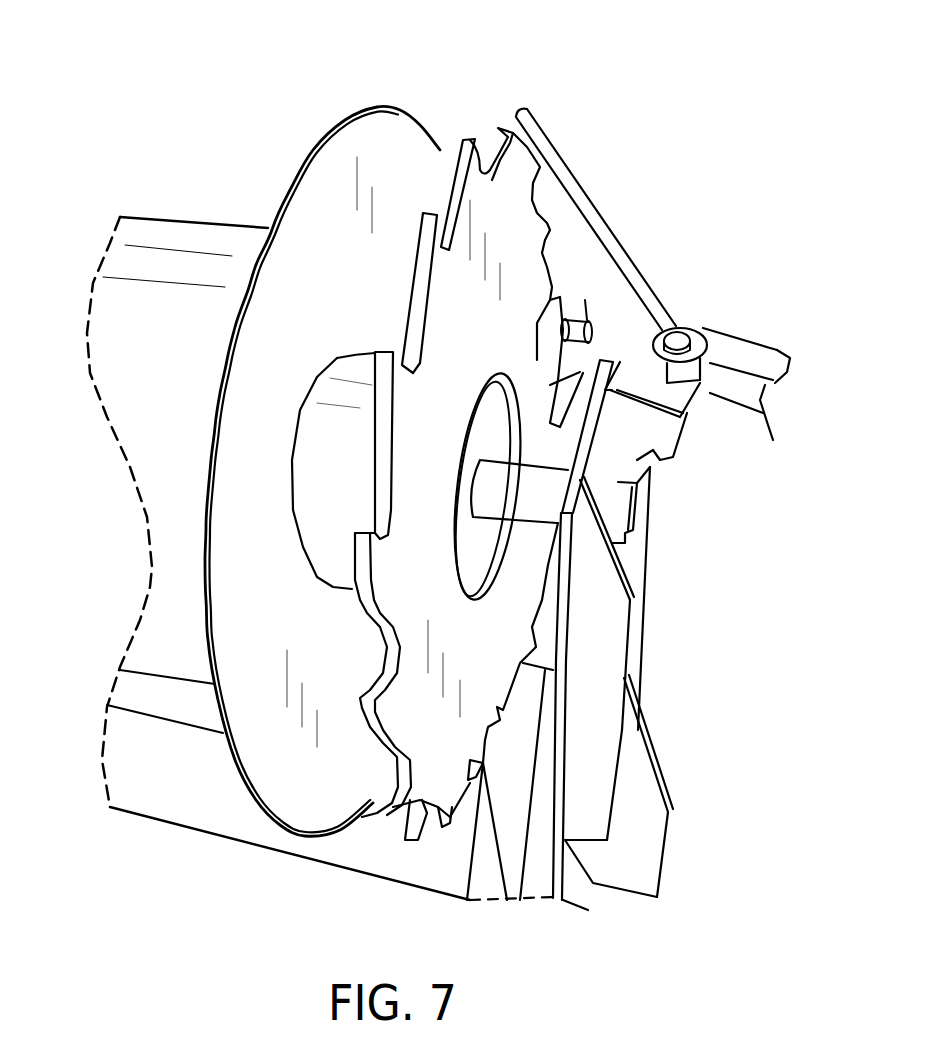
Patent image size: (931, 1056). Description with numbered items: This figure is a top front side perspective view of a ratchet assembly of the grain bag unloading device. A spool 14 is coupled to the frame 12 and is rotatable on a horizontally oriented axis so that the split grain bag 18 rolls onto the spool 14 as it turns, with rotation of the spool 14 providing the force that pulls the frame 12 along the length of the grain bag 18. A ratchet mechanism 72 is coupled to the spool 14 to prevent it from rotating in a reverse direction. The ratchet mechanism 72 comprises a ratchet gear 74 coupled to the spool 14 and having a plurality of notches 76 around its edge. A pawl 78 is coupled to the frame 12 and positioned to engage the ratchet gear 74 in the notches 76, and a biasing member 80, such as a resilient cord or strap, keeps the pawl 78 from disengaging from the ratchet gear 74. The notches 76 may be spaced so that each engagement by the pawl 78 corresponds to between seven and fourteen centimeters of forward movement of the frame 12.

The frame 12 is at (600, 583).
The spool 14 is at (312, 210).
The grain bag 18 is at (183, 240).
The ratchet mechanism 72 is at (563, 277).
The ratchet gear 74 is at (503, 213).
The notch 76 is at (392, 332).
The pawl 78 is at (560, 290).
The biasing member 80 is at (587, 356).